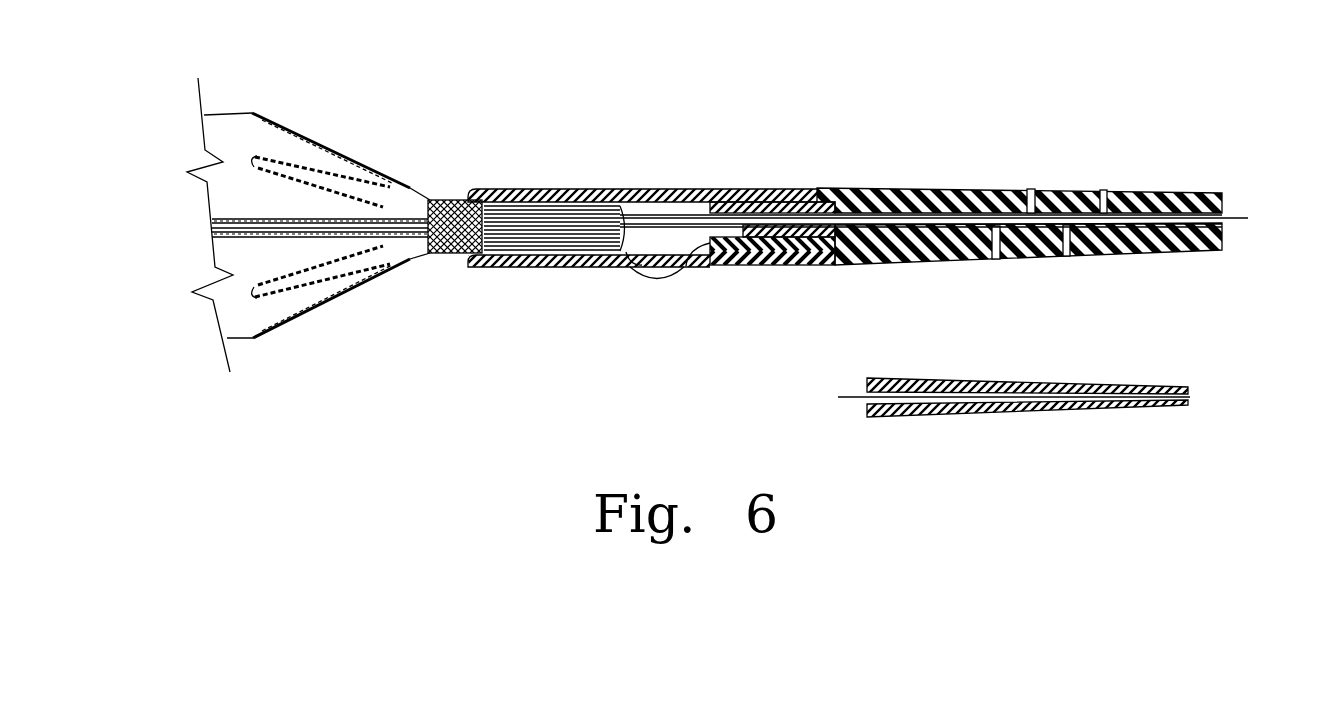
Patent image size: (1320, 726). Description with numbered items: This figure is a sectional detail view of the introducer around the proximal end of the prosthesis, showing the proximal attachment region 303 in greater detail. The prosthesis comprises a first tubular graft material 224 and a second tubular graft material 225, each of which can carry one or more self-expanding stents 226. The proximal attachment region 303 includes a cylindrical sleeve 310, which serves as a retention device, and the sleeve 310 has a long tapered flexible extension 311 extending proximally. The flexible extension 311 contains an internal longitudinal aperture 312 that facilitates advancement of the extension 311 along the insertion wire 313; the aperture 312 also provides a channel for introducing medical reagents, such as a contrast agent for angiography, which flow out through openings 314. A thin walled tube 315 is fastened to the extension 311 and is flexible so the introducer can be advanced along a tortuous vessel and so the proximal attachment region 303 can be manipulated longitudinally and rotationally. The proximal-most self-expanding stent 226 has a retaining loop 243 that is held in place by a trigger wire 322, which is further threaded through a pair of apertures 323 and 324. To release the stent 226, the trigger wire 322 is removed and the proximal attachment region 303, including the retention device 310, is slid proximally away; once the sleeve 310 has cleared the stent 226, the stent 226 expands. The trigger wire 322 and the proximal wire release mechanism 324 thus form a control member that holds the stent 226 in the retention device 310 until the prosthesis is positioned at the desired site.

The first tubular graft material 224 is at (232, 133).
The second tubular graft material 225 is at (442, 257).
The self-expanding stents 226 is at (340, 297).
The retaining loop 243 is at (650, 213).
The proximal attachment region 303 is at (750, 152).
The cylindrical sleeve 310 is at (543, 191).
The tapered flexible extension 311 is at (937, 185).
The internal longitudinal aperture 312 is at (980, 265).
The insertion wire 313 is at (1230, 216).
The openings 314 is at (1102, 188).
The thin walled tube 315 is at (407, 214).
The trigger wire 322 is at (660, 273).
The aperture 323 is at (642, 282).
The aperture 324 is at (682, 280).